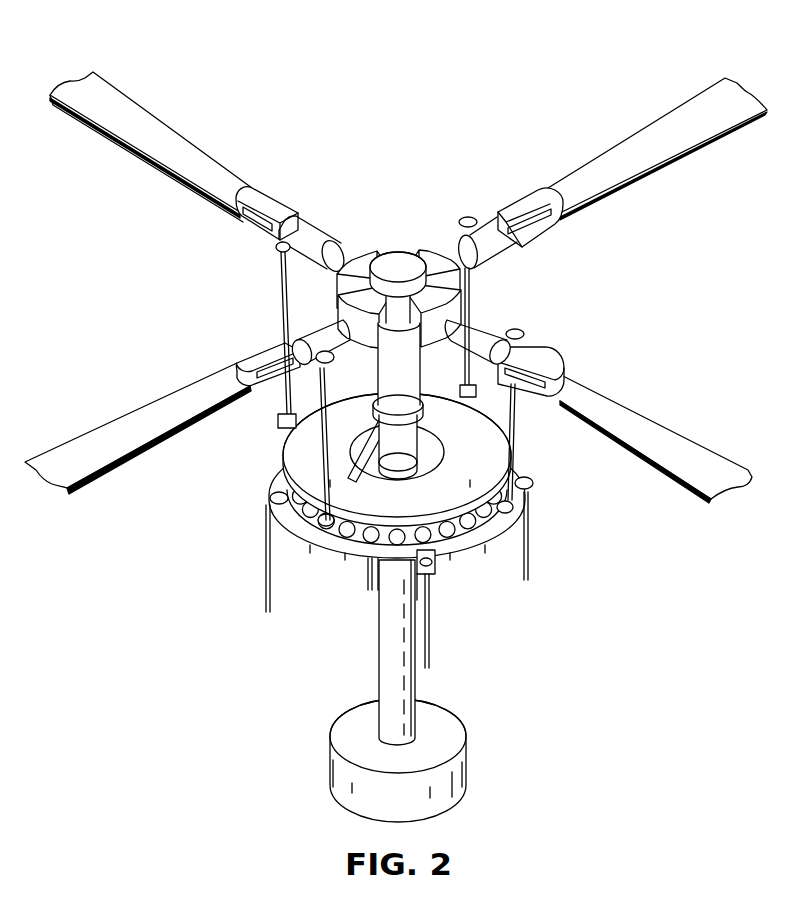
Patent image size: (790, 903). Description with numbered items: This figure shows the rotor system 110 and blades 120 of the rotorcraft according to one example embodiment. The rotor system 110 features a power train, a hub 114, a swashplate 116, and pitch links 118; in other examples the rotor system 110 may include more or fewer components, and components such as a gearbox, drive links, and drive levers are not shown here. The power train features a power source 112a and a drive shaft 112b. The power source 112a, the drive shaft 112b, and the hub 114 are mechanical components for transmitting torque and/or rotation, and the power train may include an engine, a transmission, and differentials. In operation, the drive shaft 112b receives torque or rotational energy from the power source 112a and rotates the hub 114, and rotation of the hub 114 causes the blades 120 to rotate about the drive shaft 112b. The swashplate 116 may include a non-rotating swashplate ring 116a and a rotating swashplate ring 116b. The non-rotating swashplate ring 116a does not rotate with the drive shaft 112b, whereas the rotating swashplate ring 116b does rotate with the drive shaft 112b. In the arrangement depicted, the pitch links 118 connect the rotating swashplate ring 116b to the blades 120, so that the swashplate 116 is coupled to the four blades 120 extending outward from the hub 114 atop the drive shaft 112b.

The rotor system 110 is at (448, 73).
The power source 112a is at (470, 763).
The drive shaft 112b is at (378, 655).
The hub 114 is at (358, 257).
The swashplate 116 is at (398, 530).
The non-rotating swashplate ring 116a is at (460, 553).
The rotating swashplate ring 116b is at (295, 444).
The pitch links 118 is at (280, 303).
The blades 120 is at (173, 138).